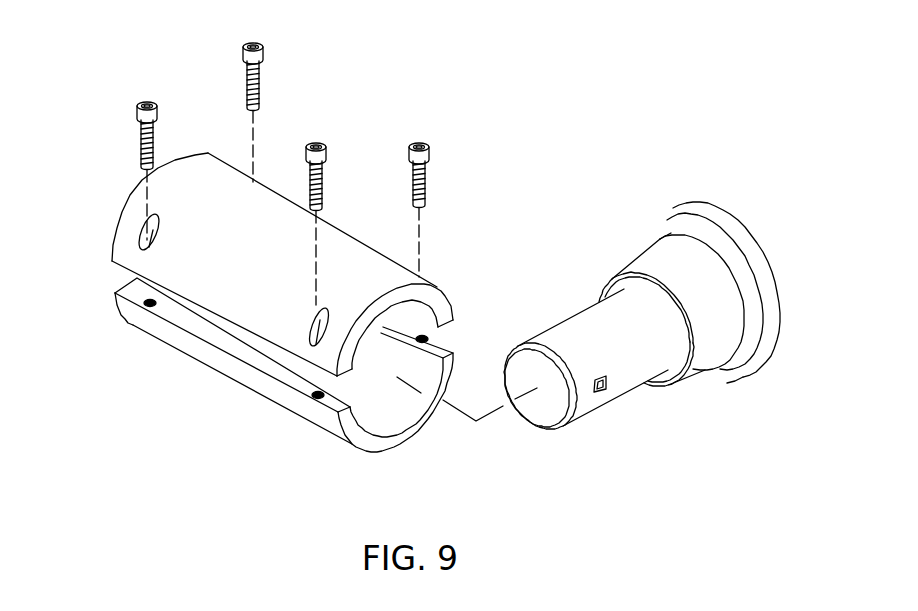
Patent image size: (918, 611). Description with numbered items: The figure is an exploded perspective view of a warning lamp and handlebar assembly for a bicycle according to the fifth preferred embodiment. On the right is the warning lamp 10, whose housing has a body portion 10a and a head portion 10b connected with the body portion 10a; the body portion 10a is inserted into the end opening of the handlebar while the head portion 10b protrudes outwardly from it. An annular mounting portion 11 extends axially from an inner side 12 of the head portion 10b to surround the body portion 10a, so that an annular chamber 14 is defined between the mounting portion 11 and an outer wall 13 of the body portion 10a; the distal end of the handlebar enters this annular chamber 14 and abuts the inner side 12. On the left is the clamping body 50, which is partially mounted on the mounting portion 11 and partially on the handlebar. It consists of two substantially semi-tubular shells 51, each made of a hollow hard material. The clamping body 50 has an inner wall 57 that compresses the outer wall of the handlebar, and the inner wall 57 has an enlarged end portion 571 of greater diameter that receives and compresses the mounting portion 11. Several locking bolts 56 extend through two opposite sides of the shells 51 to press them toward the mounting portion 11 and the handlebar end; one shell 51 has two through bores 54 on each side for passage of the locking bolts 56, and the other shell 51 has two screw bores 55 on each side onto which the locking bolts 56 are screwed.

The warning lamp 10 is at (592, 212).
The body portion 10a is at (623, 378).
The head portion 10b is at (757, 367).
The mounting portion 11 is at (665, 260).
The inner side 12 is at (725, 250).
The outer wall 13 is at (563, 327).
The annular chamber 14 is at (618, 280).
The clamping body 50 is at (362, 160).
The semi-tubular shell 51 is at (100, 290).
The through bore 54 is at (157, 238).
The screw bore 55 is at (147, 303).
The locking bolt 56 is at (427, 170).
The inner wall 57 is at (363, 357).
The enlarged end portion 571 is at (400, 406).